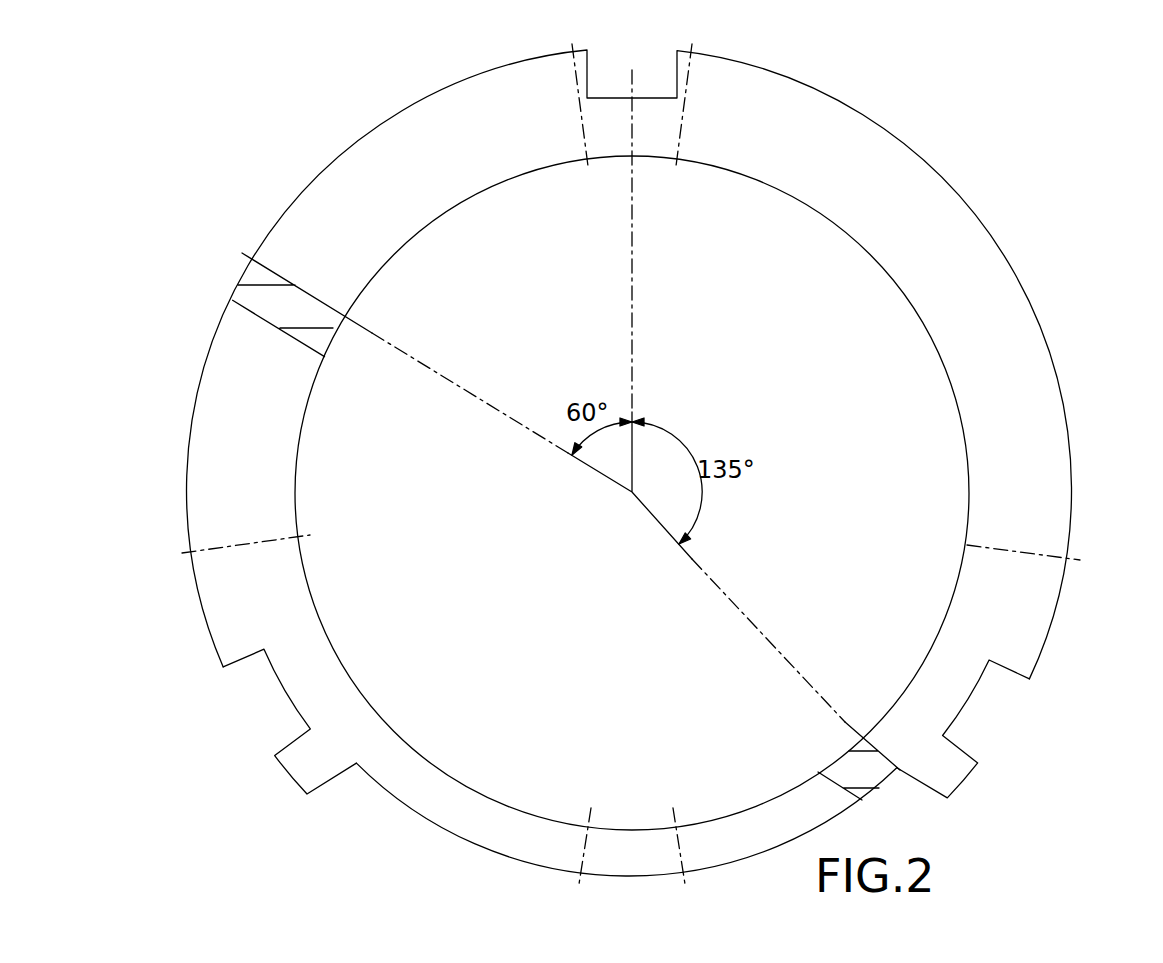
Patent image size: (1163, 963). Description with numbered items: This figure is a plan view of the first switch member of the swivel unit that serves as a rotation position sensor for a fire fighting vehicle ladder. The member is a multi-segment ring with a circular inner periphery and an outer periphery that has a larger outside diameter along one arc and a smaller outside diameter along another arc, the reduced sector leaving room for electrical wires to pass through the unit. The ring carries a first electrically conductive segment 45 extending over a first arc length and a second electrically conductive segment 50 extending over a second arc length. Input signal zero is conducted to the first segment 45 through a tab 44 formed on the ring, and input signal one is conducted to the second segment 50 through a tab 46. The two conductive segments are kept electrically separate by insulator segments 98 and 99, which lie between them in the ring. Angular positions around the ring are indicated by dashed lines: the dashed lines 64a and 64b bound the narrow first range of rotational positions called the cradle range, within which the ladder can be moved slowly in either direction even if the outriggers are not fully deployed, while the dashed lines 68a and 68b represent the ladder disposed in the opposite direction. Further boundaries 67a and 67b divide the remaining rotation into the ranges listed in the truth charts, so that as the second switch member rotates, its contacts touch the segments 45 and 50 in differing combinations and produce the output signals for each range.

The tab 44 is at (305, 762).
The first electrically conductive segment 45 is at (228, 408).
The tab 46 is at (948, 776).
The second electrically conductive segment 50 is at (1012, 383).
The dashed line 64a is at (582, 120).
The dashed line 64b is at (680, 120).
The range boundary 67a is at (215, 547).
The range boundary 67b is at (1037, 556).
The dashed line 68a is at (584, 833).
The dashed line 68b is at (677, 833).
The insulator segment 98 is at (873, 773).
The insulator segment 99 is at (272, 300).